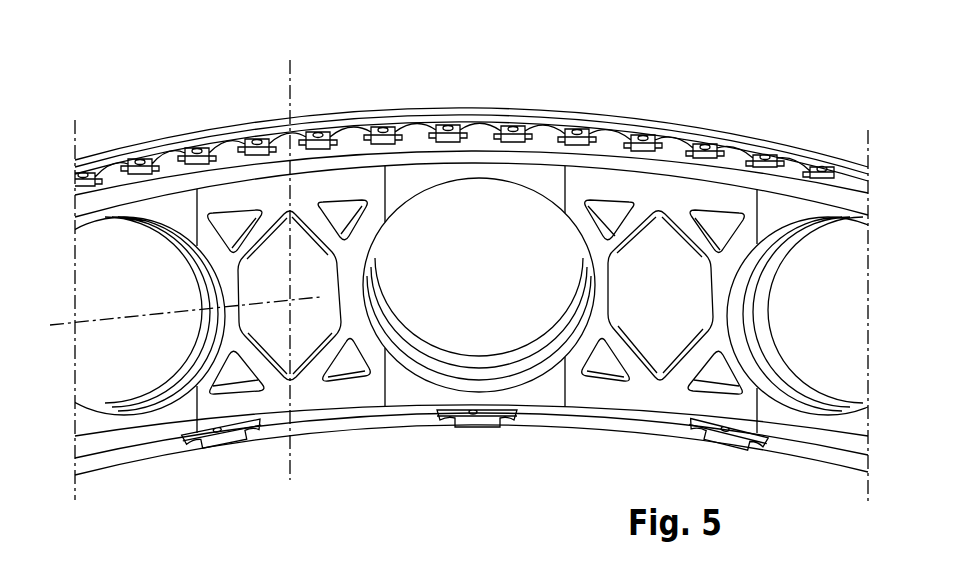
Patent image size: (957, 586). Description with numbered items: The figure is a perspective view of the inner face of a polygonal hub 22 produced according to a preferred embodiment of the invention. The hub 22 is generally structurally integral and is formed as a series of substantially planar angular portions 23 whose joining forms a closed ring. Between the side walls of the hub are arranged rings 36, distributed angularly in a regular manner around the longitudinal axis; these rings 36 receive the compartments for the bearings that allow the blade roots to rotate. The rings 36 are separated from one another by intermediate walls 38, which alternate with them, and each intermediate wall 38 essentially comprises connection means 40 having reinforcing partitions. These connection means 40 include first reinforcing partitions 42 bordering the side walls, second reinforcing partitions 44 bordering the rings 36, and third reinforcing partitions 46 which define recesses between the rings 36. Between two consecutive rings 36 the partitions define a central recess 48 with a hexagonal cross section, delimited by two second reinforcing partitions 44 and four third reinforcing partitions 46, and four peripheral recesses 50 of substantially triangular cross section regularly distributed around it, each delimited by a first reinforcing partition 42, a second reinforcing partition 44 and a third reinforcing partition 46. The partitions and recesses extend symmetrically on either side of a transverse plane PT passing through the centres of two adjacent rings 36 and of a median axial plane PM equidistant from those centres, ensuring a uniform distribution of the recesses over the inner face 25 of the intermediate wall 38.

The hub 22 is at (655, 427).
The angular portions 23 is at (135, 462).
The inner face 25 is at (740, 412).
The rings 36 is at (529, 350).
The intermediate walls 38 is at (350, 173).
The connection means 40 is at (223, 201).
The first reinforcing partitions 42 is at (318, 185).
The second reinforcing partitions 44 is at (227, 295).
The third reinforcing partitions 46 is at (322, 213).
The central recess 48 is at (306, 318).
The peripheral recesses 50 is at (345, 364).
The median axial plane PM is at (290, 98).
The transverse plane PT is at (62, 323).